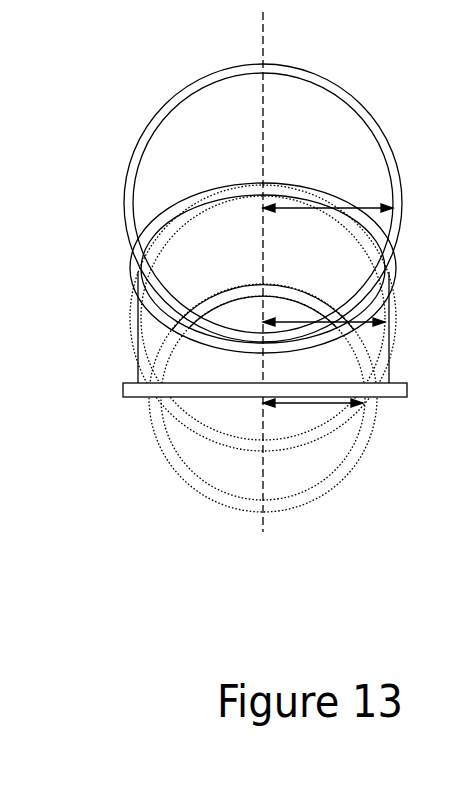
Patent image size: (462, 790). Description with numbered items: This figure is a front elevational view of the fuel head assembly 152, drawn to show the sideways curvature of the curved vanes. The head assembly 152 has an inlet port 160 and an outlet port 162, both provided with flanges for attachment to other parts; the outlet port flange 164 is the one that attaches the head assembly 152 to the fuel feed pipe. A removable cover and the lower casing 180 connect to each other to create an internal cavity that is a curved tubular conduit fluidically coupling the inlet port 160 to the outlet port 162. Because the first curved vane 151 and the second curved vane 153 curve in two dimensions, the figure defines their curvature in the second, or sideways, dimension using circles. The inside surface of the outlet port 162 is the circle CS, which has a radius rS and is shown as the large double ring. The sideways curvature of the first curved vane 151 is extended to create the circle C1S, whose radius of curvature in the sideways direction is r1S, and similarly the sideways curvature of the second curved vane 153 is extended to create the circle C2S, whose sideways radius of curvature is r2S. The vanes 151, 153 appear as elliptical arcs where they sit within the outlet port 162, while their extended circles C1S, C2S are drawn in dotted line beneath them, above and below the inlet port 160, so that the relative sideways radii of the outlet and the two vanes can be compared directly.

The fuel head assembly 152 is at (247, 180).
The outlet port 162 is at (227, 98).
The outlet port flange 164 is at (342, 96).
The first curved vane 151 is at (222, 188).
The second curved vane 153 is at (243, 289).
The lower casing 180 is at (138, 328).
The inlet port 160 is at (240, 397).
The circle of outlet inside surface CS is at (378, 137).
The first vane sideways curvature circle C1S is at (386, 295).
The second vane sideways curvature circle C2S is at (366, 413).